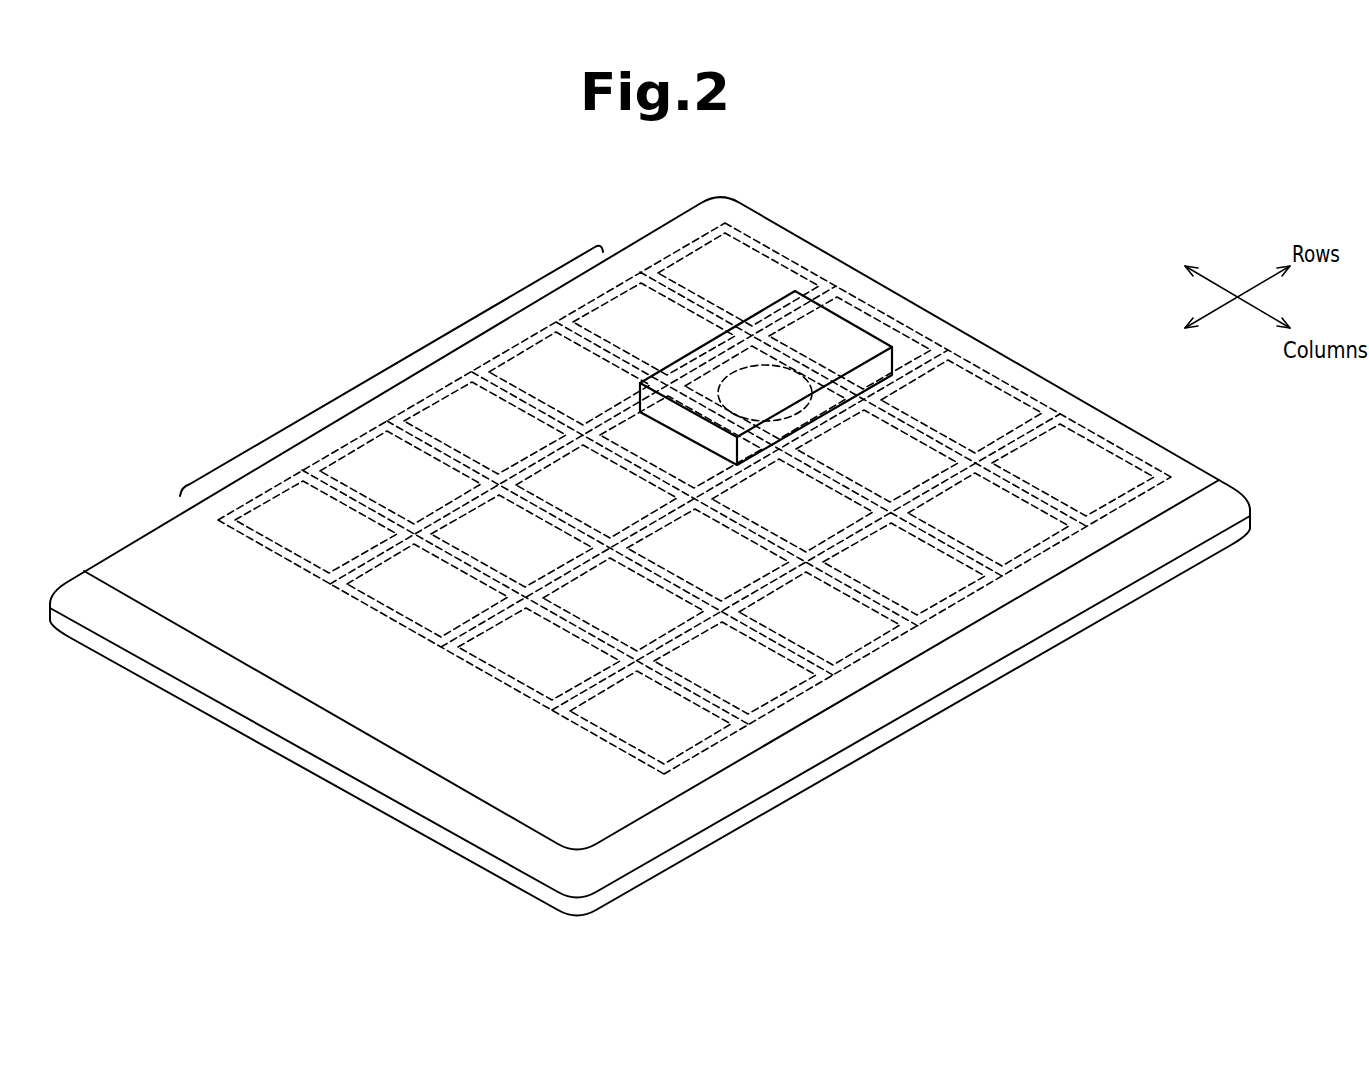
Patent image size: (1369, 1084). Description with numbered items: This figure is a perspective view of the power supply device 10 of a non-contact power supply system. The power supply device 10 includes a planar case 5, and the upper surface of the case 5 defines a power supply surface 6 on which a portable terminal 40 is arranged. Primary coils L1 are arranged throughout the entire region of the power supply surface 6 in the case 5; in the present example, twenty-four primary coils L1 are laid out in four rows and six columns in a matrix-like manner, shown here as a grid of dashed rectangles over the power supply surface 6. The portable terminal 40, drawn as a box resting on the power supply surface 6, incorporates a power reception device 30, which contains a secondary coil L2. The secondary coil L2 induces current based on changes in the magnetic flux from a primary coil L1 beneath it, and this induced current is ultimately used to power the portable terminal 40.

The power supply device 10 is at (740, 820).
The planar case 5 is at (1210, 528).
The power supply surface 6 is at (702, 238).
The portable terminal 40 is at (743, 314).
The power reception device 30 is at (690, 349).
The primary coil L1 is at (388, 367).
The secondary coil L2 is at (829, 421).